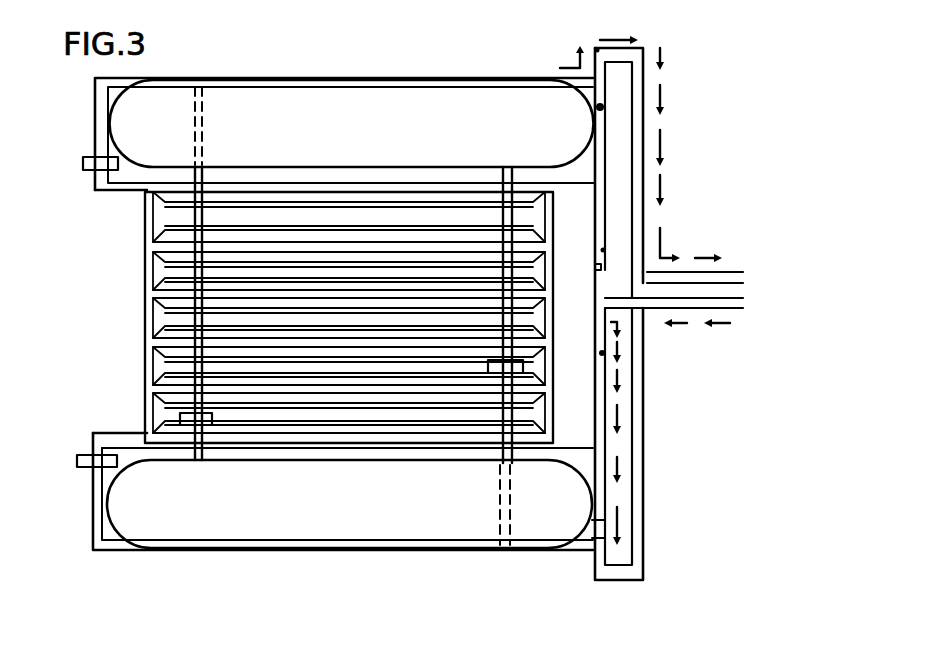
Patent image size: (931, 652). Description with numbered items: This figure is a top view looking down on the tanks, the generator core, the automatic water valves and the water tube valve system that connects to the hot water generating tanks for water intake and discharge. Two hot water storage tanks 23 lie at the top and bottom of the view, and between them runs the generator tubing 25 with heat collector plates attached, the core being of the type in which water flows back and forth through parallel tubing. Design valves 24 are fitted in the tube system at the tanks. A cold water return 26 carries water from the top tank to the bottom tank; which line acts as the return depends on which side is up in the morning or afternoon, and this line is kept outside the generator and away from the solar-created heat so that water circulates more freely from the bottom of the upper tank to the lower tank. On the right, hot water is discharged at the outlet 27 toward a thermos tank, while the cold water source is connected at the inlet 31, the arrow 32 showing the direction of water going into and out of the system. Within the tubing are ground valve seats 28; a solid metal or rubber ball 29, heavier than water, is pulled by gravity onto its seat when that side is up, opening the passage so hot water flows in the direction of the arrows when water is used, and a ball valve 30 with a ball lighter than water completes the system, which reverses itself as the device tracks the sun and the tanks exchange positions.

The hot water storage tank 23 is at (324, 82).
The design valve 24 is at (80, 157).
The generator tubing 25 is at (145, 282).
The cold water return 26 is at (215, 218).
The hot water discharge 27 is at (745, 273).
The ground valve seat 28 is at (597, 50).
The solid metal or rubber ball 29 is at (600, 107).
The ball valve 30 is at (595, 266).
The cold water source connection 31 is at (740, 302).
The arrow 32 is at (716, 330).